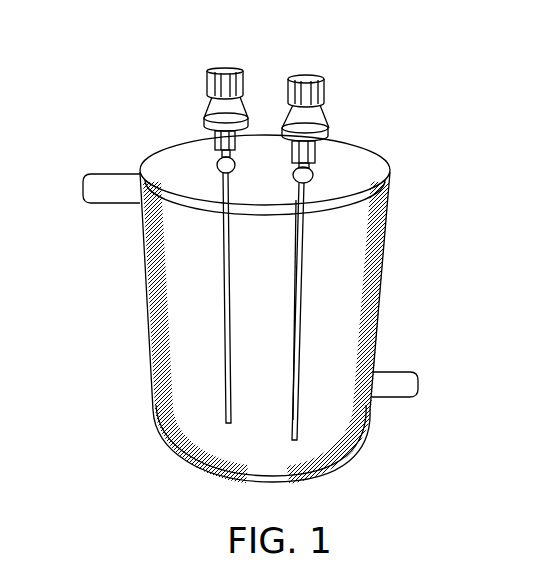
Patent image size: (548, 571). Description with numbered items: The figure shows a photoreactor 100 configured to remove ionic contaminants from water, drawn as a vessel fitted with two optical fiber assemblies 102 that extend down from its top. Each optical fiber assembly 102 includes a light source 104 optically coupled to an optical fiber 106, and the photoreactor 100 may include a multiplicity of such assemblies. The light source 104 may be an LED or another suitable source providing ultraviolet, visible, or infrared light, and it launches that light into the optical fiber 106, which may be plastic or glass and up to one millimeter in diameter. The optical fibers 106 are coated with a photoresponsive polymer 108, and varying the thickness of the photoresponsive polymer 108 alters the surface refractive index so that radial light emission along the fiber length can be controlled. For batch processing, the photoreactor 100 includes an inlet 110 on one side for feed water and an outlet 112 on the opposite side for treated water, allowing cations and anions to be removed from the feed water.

The photoreactor 100 is at (172, 78).
The optical fiber assembly 102 is at (337, 154).
The light source 104 is at (326, 77).
The optical fiber 106 is at (297, 282).
The photoresponsive polymer 108 is at (230, 378).
The inlet 110 is at (120, 172).
The outlet 112 is at (396, 392).